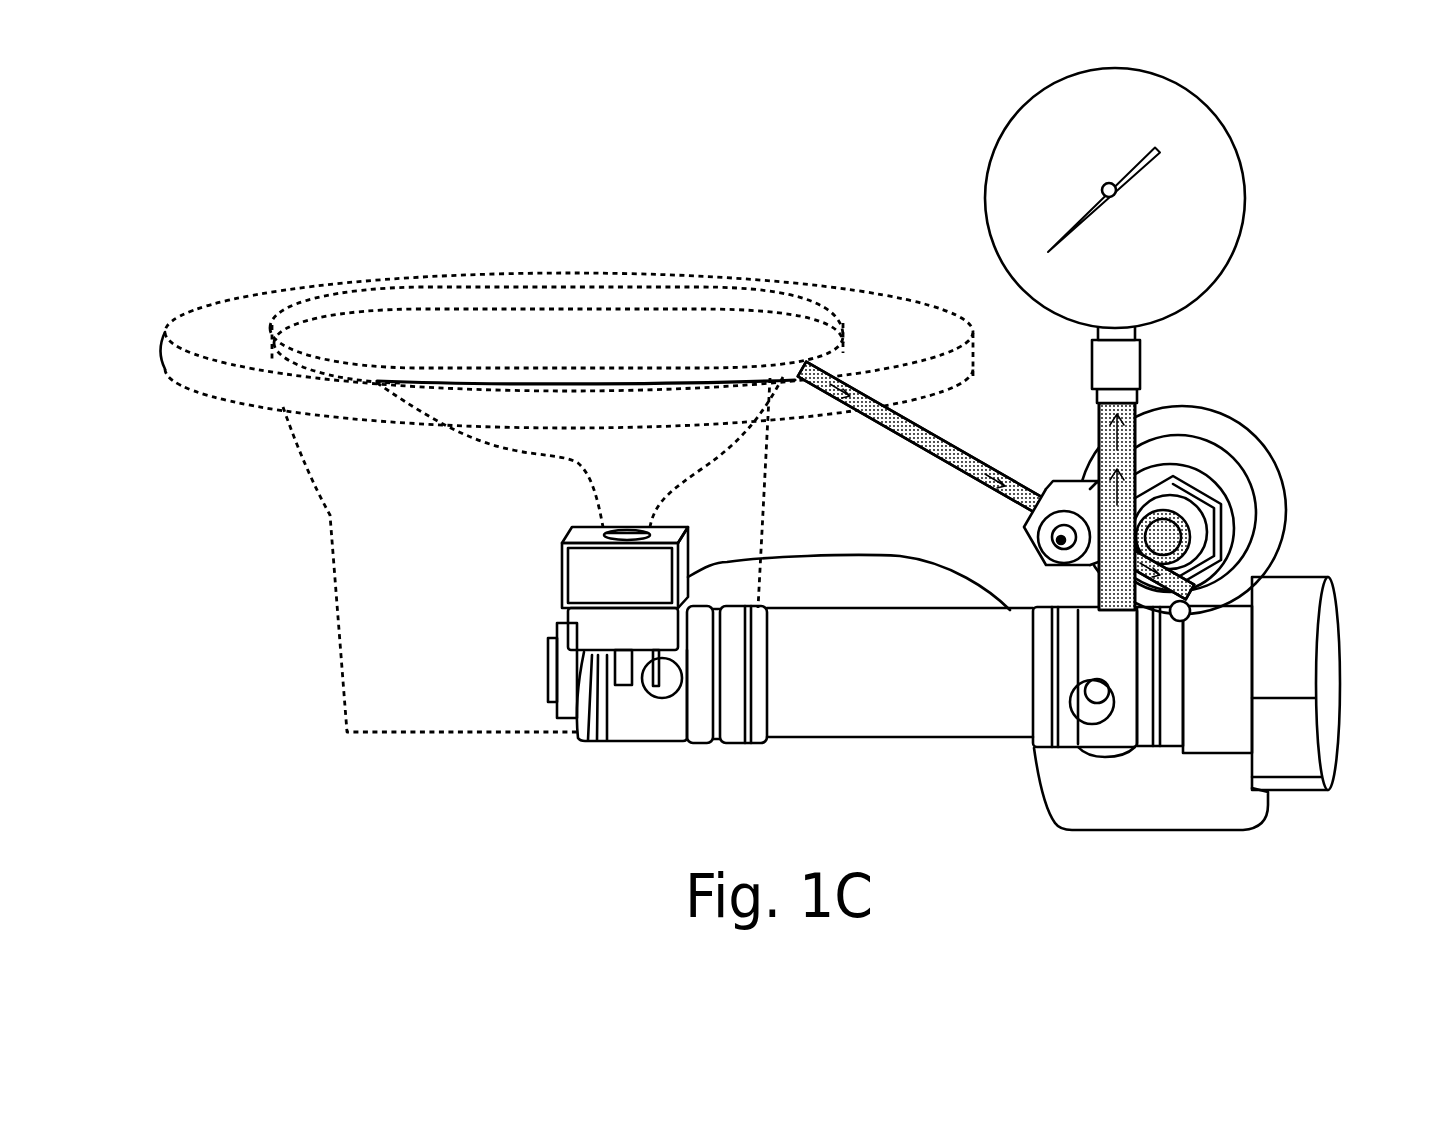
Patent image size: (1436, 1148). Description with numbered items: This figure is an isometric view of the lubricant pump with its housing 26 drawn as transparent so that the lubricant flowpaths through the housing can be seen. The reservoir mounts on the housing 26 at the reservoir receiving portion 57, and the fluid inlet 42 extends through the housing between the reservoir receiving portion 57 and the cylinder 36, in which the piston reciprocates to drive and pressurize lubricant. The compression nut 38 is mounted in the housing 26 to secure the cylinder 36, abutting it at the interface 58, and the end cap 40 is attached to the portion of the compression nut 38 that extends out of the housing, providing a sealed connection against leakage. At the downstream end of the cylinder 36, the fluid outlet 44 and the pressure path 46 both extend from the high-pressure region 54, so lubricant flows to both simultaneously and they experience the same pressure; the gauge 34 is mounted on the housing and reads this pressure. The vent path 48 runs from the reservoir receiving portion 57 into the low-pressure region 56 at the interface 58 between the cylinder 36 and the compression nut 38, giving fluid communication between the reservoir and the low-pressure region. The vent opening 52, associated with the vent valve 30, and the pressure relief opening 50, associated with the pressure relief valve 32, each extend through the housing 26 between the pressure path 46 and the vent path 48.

The housing 26 is at (732, 276).
The reservoir receiving portion 57 is at (635, 368).
The fluid inlet 42 is at (640, 517).
The cylinder 36 is at (888, 738).
The high-pressure region 54 is at (1047, 845).
The low-pressure region 56 is at (1278, 845).
The compression nut 38 is at (1223, 742).
The fluid outlet 44 is at (1052, 760).
The end cap 40 is at (1340, 698).
The vent valve 30 is at (1245, 443).
The vent opening 52 is at (1190, 545).
The vent path 48 is at (853, 388).
The pressure relief opening 50 is at (1087, 481).
The pressure relief valve 32 is at (1027, 540).
The pressure path 46 is at (1133, 427).
The interface 58 is at (1193, 607).
The gauge 34 is at (1228, 130).